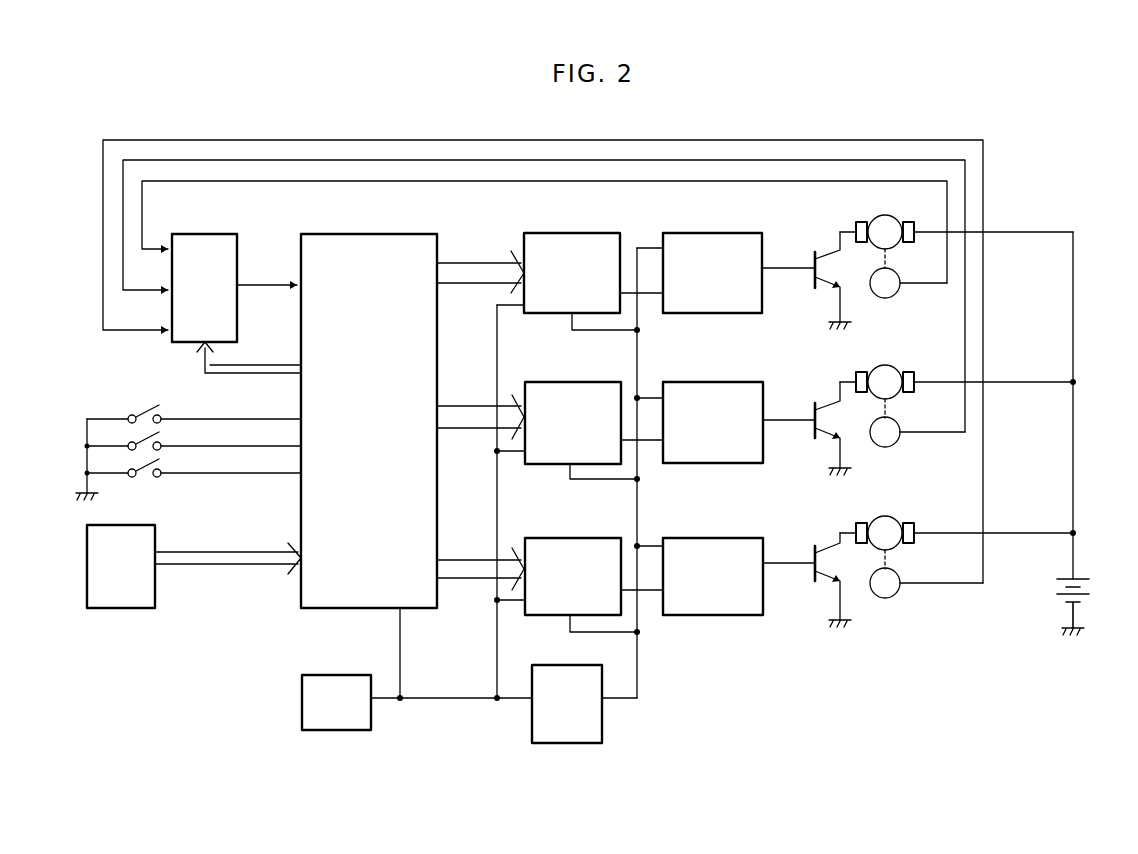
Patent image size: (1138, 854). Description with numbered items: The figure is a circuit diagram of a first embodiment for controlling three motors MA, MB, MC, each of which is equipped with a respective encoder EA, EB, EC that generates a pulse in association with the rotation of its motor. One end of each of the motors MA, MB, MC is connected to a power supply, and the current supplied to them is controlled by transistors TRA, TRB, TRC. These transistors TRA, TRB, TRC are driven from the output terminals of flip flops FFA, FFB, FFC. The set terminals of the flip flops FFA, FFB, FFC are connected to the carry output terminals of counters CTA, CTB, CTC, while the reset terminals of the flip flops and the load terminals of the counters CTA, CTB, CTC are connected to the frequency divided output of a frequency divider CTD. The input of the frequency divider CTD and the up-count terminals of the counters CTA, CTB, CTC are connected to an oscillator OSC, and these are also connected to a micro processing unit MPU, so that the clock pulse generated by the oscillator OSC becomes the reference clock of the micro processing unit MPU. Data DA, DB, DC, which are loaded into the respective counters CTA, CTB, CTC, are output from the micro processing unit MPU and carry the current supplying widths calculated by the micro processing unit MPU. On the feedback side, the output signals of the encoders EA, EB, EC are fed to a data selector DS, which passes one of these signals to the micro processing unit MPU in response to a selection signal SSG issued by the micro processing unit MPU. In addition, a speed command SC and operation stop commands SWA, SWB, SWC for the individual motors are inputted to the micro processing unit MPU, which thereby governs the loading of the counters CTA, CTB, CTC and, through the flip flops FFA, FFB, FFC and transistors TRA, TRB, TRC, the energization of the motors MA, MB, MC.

The data selector DS is at (206, 245).
The micro processing unit MPU is at (378, 245).
The selection signal SSG is at (262, 363).
The operation stop command SWA is at (168, 417).
The operation stop command SWB is at (168, 444).
The operation stop command SWC is at (168, 471).
The speed command SC is at (112, 595).
The data DA is at (480, 270).
The data DB is at (466, 418).
The data DC is at (468, 567).
The counter CTA is at (572, 240).
The counter CTB is at (572, 393).
The counter CTC is at (565, 550).
The frequency divider CTD is at (568, 730).
The flip flop FFA is at (711, 245).
The flip flop FFB is at (711, 393).
The flip flop FFC is at (711, 550).
The transistor TRA is at (812, 280).
The transistor TRB is at (812, 432).
The transistor TRC is at (812, 578).
The motor MA is at (872, 221).
The motor MB is at (871, 373).
The motor MC is at (880, 520).
The encoder EA is at (890, 291).
The encoder EB is at (893, 440).
The encoder EC is at (887, 600).
The oscillator OSC is at (332, 718).